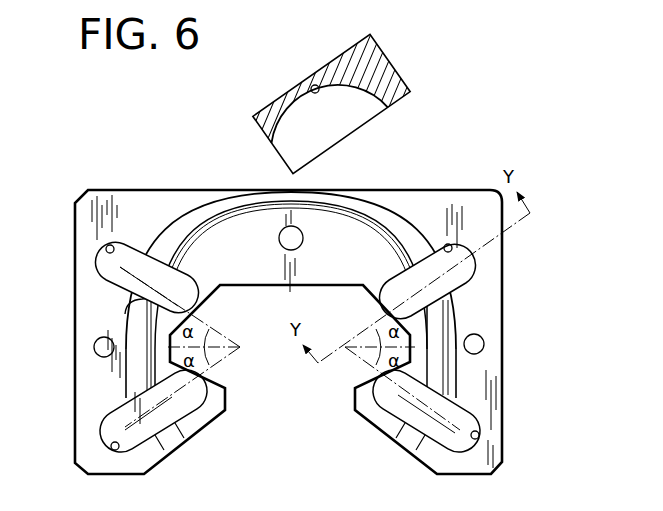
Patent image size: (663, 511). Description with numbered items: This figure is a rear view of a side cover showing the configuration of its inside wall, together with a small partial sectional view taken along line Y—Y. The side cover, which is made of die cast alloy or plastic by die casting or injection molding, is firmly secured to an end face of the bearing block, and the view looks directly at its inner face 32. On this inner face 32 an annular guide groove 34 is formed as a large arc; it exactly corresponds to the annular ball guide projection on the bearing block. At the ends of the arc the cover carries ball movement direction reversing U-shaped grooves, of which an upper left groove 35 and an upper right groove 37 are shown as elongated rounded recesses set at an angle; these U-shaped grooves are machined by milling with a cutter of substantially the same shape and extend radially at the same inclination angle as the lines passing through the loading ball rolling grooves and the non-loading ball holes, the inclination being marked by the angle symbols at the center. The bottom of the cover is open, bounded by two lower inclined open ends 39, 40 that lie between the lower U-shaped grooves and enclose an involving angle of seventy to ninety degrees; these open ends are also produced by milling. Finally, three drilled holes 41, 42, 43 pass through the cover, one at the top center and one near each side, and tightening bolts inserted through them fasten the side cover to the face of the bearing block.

The inner face 32 is at (491, 267).
The annular guide groove 34 is at (185, 218).
The ball movement direction reversing U-shaped groove 35 is at (112, 244).
The ball movement direction reversing U-shaped groove 37 is at (452, 244).
The lower inclined open end 39 is at (207, 433).
The lower inclined open end 40 is at (377, 426).
The drilled hole 41 is at (279, 238).
The drilled hole 42 is at (94, 347).
The drilled hole 43 is at (484, 344).